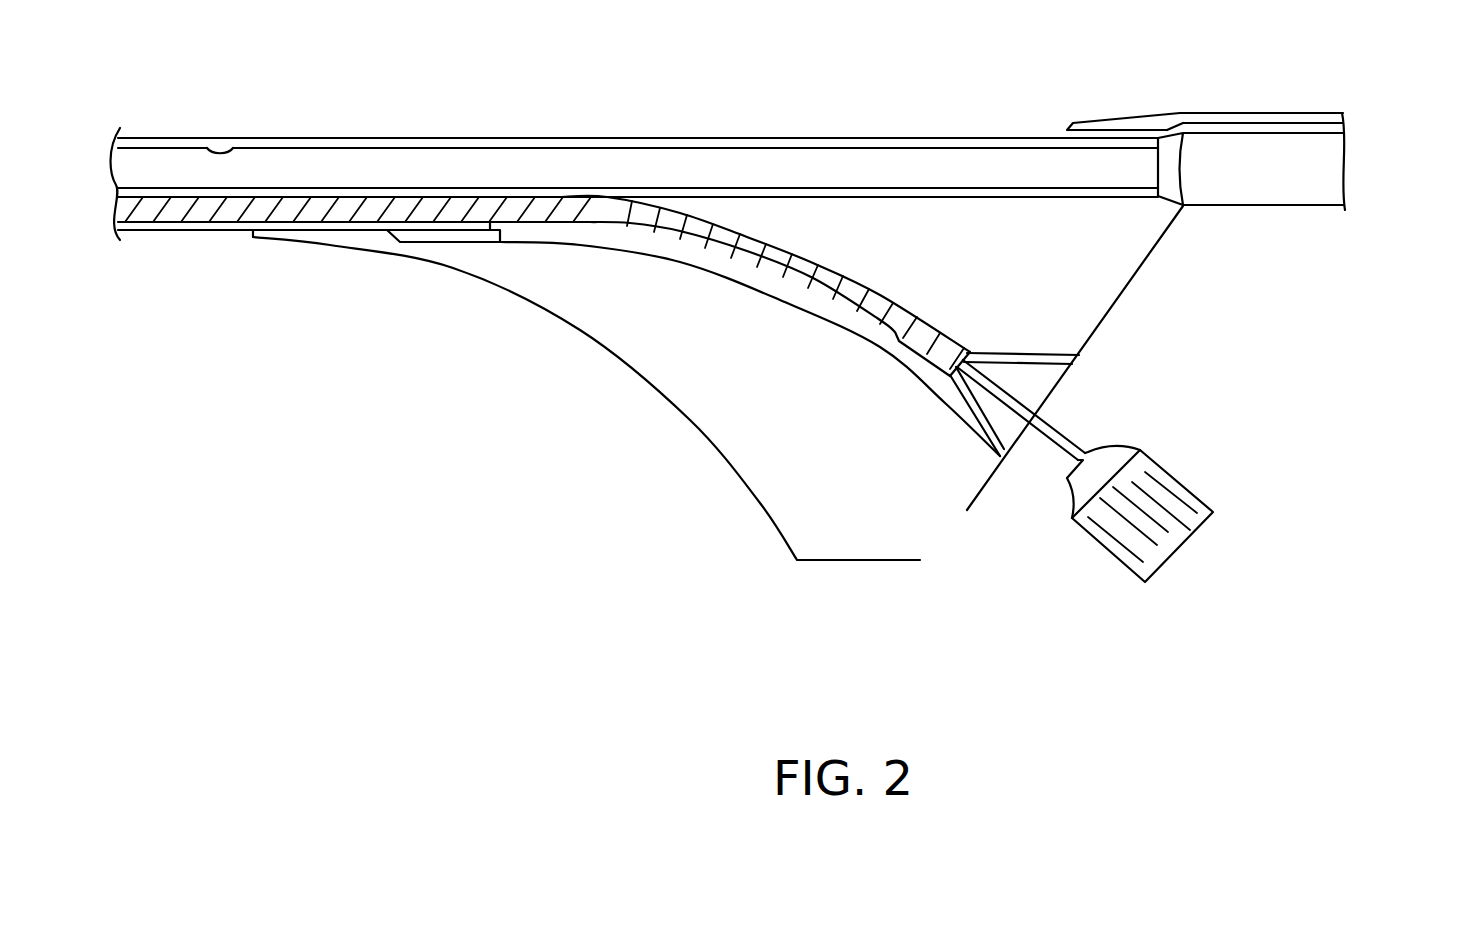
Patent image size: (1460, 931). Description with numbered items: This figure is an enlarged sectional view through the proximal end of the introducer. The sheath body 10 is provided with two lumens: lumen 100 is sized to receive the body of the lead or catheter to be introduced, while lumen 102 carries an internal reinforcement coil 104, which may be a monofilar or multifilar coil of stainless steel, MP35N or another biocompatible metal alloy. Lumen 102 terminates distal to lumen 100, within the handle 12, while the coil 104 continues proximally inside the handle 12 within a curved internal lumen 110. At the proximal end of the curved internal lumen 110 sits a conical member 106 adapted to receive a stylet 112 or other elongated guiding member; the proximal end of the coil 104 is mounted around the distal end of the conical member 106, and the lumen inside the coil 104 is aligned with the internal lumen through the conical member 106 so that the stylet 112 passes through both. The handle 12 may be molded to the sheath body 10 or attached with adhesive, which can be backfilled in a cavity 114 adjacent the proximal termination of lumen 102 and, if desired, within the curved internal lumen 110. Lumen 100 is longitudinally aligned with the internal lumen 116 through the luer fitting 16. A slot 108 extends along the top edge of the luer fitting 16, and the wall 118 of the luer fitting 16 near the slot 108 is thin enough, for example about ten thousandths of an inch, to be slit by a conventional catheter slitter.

The sheath body 10 is at (150, 140).
The lumen 100 is at (226, 150).
The lumen 102 is at (168, 207).
The internal reinforcement coil 104 is at (930, 352).
The cavity 114 is at (430, 238).
The handle 12 is at (692, 393).
The curved internal lumen 110 is at (814, 308).
The conical member 106 is at (980, 425).
The stylet 112 is at (1057, 440).
The slot 108 is at (1157, 124).
The wall 118 is at (1293, 120).
The internal lumen 116 is at (1273, 133).
The luer fitting 16 is at (1287, 208).